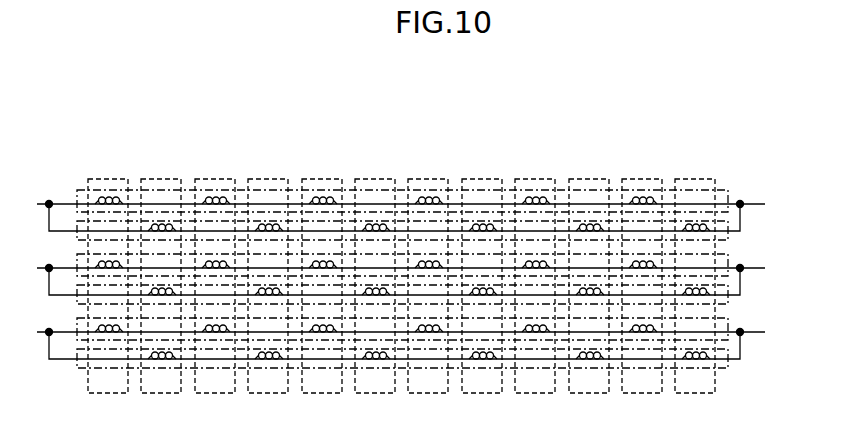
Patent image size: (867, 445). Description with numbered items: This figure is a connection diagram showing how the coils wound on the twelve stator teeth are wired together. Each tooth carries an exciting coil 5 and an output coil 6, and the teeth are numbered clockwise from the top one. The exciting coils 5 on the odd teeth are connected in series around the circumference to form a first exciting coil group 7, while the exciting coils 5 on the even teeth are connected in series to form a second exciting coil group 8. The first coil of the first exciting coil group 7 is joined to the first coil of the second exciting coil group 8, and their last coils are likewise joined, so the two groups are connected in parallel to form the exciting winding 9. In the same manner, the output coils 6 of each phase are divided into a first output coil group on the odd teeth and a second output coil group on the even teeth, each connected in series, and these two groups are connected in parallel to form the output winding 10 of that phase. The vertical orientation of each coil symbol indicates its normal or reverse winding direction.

The exciting coil 5 is at (103, 202).
The output coil 6 is at (108, 335).
The first exciting coil group 7 is at (733, 190).
The second exciting coil group 8 is at (731, 243).
The exciting winding 9 is at (765, 207).
The output winding 10 is at (53, 248).